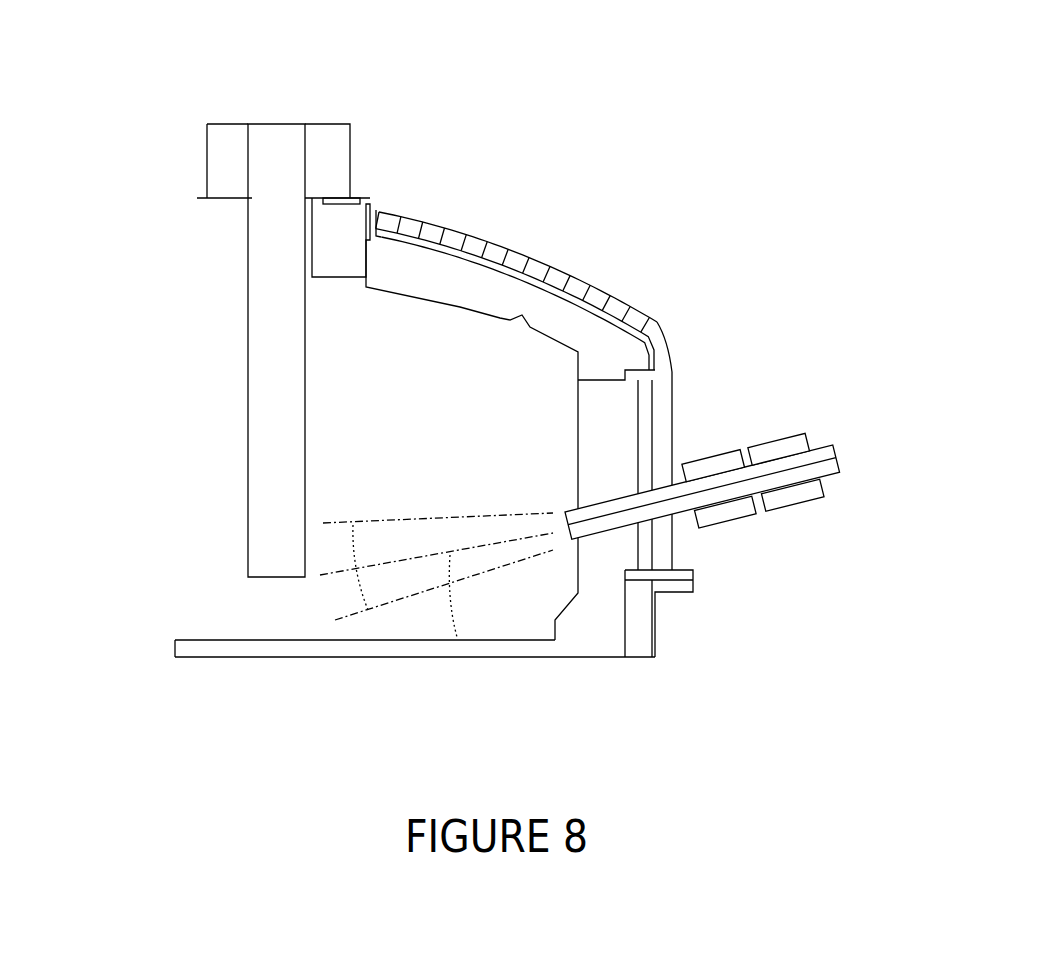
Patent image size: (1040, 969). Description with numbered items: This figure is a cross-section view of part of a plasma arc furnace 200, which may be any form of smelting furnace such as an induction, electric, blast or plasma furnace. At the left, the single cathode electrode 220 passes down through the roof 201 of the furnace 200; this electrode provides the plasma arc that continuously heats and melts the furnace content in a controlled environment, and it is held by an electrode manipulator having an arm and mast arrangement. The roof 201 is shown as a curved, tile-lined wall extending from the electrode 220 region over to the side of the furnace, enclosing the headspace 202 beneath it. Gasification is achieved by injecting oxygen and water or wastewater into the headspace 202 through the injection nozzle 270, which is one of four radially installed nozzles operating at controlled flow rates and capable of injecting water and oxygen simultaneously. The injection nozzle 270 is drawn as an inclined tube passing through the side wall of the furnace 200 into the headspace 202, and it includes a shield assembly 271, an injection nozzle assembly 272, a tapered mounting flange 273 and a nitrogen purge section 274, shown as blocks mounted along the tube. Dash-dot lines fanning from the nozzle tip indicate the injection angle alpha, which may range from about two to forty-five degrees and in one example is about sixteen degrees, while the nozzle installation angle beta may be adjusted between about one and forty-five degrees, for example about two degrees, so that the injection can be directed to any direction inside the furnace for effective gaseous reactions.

The furnace 200 is at (505, 180).
The roof 201 is at (570, 268).
The headspace 202 is at (670, 407).
The cathode electrode 220 is at (306, 470).
The injection nozzle 270 is at (782, 473).
The shield assembly 271 is at (720, 450).
The injection nozzle assembly 272 is at (806, 437).
The tapered mounting flange 273 is at (813, 502).
The nitrogen purge section 274 is at (728, 522).